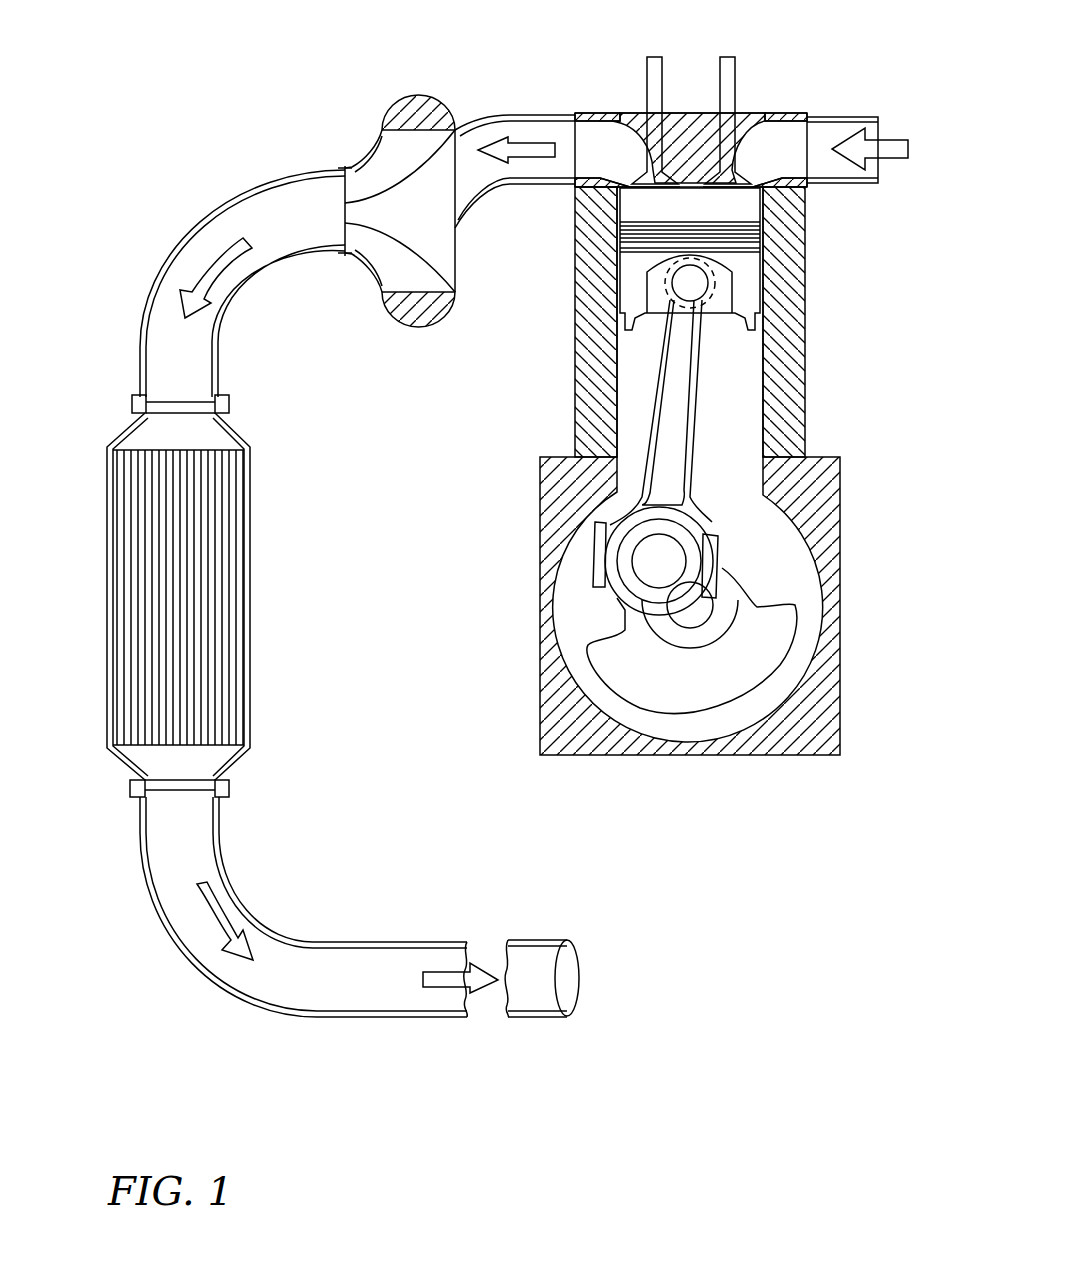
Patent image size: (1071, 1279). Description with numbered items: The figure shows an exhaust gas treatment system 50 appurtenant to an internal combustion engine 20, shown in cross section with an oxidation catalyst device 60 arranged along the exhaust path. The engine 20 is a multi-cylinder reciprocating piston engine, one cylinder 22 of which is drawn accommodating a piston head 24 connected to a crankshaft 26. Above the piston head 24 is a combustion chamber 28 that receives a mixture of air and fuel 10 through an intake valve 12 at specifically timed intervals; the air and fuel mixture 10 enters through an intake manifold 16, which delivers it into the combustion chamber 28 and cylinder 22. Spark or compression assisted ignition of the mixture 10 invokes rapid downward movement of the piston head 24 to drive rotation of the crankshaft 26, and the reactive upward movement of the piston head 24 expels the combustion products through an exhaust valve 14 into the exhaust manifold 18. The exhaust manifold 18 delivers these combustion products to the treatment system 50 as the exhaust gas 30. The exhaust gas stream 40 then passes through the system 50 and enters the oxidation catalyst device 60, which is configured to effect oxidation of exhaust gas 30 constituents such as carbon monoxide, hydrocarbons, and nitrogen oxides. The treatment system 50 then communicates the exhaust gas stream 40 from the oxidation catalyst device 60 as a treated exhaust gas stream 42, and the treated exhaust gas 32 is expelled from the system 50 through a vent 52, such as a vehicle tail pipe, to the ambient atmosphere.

The mixture of air and fuel 10 is at (890, 138).
The intake valve 12 is at (733, 167).
The exhaust valve 14 is at (652, 170).
The intake manifold 16 is at (845, 117).
The exhaust manifold 18 is at (558, 117).
The internal combustion engine 20 is at (805, 293).
The cylinder 22 is at (765, 394).
The piston head 24 is at (628, 292).
The crankshaft 26 is at (659, 561).
The combustion chamber 28 is at (765, 196).
The exhaust gas 30 is at (528, 145).
The treated exhaust gas 32 is at (437, 988).
The exhaust gas stream 40 is at (203, 273).
The treated exhaust gas stream 42 is at (210, 923).
The exhaust gas treatment system 50 is at (180, 175).
The vent 52 is at (575, 975).
The oxidation catalyst device 60 is at (100, 550).